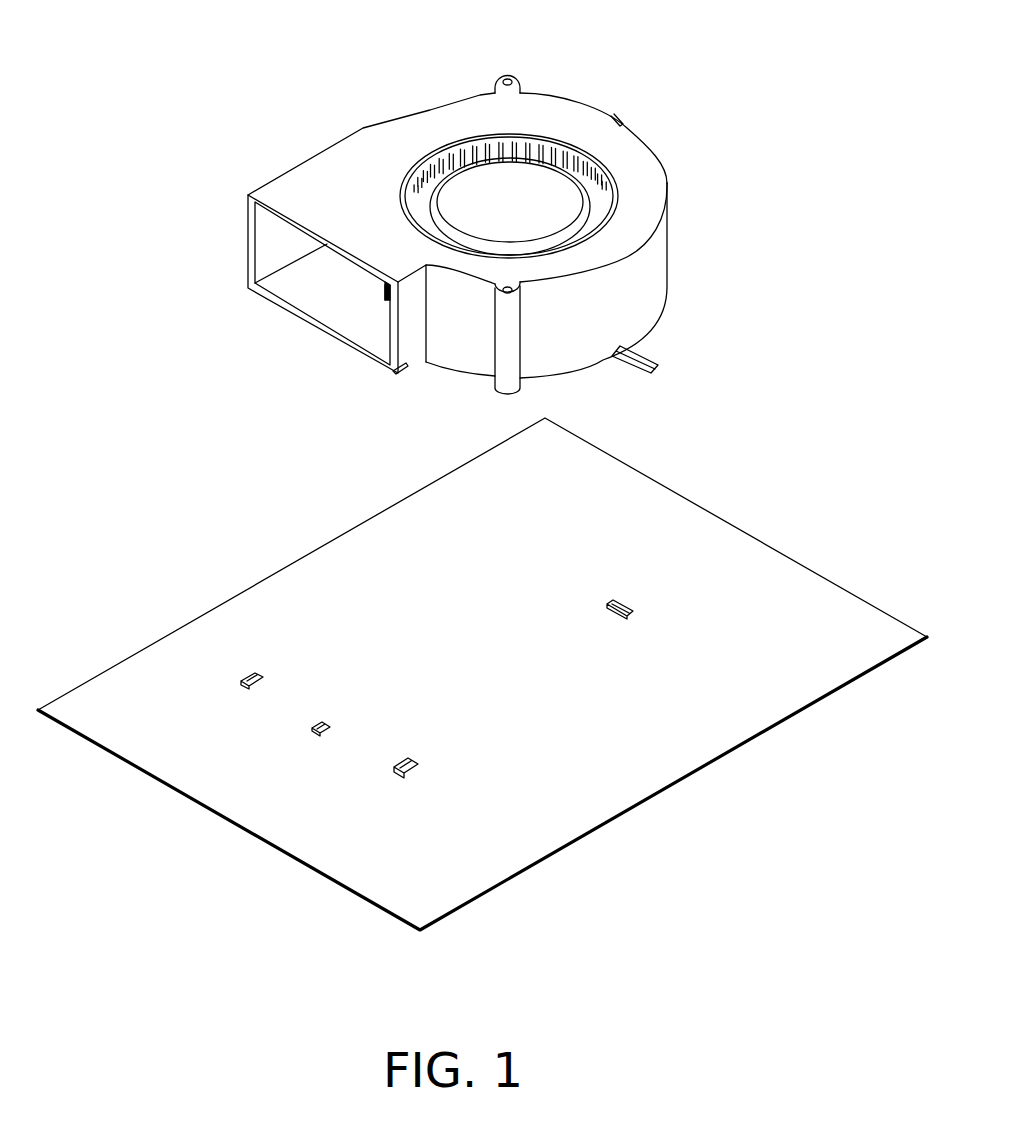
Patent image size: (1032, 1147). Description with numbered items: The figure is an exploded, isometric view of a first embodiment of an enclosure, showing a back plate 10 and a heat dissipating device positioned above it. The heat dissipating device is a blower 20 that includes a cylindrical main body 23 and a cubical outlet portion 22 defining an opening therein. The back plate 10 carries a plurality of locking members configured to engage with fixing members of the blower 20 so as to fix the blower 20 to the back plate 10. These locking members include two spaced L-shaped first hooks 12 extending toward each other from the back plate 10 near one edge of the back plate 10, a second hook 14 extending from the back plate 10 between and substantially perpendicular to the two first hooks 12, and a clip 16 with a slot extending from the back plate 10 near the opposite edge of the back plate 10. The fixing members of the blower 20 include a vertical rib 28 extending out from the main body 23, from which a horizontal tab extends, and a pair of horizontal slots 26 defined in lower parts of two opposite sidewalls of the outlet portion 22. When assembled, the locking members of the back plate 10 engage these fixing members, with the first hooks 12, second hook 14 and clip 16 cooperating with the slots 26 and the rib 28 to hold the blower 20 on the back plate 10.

The back plate 10 is at (305, 518).
The first hooks 12 is at (253, 673).
The second hook 14 is at (313, 733).
The clip 16 is at (633, 615).
The blower 20 is at (505, 225).
The outlet portion 22 is at (407, 328).
The main body 23 is at (653, 267).
The horizontal slots 26 is at (403, 367).
The rib 28 is at (617, 125).